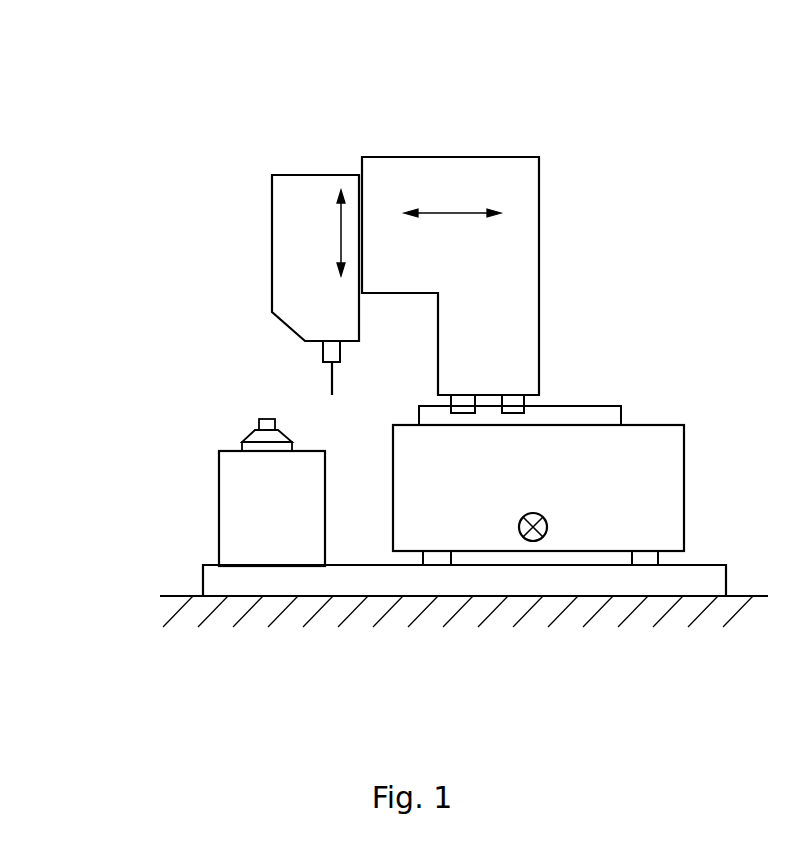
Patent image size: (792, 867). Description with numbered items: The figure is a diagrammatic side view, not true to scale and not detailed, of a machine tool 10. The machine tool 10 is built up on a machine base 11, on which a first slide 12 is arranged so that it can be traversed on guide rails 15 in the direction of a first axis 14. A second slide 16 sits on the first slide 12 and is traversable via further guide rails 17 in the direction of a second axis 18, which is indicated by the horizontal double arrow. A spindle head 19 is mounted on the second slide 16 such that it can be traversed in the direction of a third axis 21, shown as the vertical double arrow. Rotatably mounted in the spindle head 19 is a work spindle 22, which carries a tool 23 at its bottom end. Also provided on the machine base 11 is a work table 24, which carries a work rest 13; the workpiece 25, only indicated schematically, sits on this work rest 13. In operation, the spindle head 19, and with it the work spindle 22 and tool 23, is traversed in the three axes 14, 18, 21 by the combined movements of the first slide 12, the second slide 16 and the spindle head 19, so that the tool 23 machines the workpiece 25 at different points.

The machine tool 10 is at (578, 131).
The machine base 11 is at (419, 575).
The first slide 12 is at (613, 533).
The work rest 13 is at (242, 442).
The first axis 14 is at (515, 533).
The guide rails 15 is at (648, 557).
The second slide 16 is at (505, 273).
The guide rails 17 is at (537, 416).
The second axis 18 is at (443, 210).
The spindle head 19 is at (293, 190).
The third axis 21 is at (340, 230).
The work spindle 22 is at (325, 350).
The tool 23 is at (332, 380).
The work table 24 is at (277, 538).
The workpiece 25 is at (257, 423).